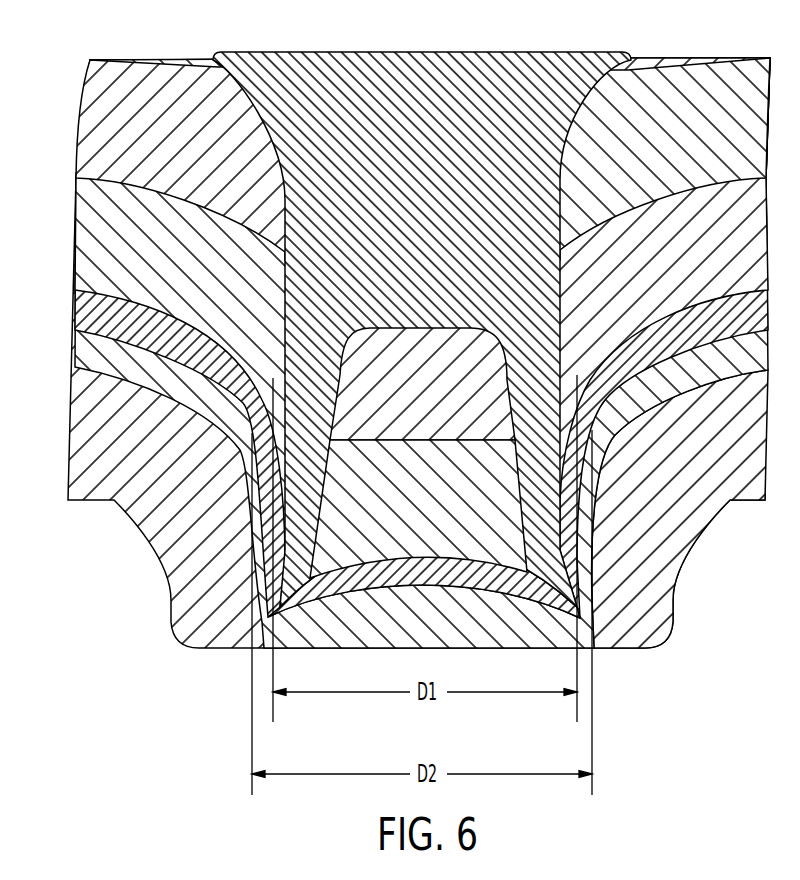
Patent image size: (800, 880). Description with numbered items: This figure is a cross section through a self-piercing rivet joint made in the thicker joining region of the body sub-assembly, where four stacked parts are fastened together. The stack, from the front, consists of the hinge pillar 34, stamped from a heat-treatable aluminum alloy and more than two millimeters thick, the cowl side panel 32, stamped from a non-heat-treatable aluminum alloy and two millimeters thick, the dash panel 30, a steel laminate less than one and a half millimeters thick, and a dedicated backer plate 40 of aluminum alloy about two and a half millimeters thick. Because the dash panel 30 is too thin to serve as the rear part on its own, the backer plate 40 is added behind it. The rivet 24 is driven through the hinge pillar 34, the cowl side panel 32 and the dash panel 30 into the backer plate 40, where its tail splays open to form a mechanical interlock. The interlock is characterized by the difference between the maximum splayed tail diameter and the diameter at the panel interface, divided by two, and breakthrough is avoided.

The rivet 24 is at (452, 73).
The dash panel 30 is at (85, 313).
The cowl side panel 32 is at (87, 245).
The hinge pillar 34 is at (93, 117).
The dedicated backer plate 40 is at (90, 435).